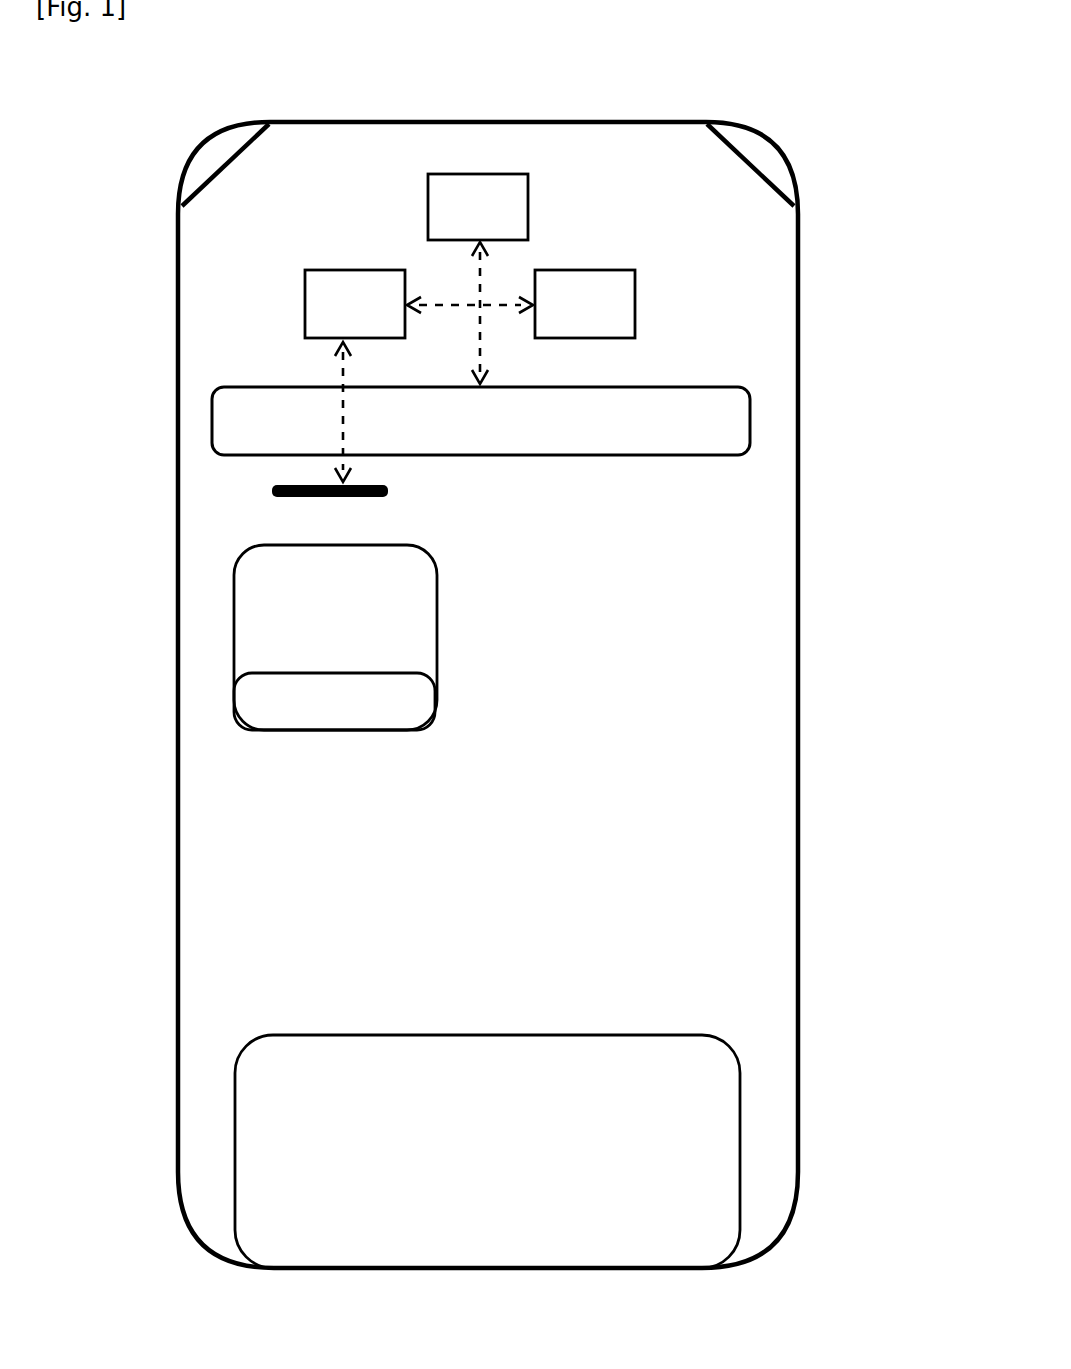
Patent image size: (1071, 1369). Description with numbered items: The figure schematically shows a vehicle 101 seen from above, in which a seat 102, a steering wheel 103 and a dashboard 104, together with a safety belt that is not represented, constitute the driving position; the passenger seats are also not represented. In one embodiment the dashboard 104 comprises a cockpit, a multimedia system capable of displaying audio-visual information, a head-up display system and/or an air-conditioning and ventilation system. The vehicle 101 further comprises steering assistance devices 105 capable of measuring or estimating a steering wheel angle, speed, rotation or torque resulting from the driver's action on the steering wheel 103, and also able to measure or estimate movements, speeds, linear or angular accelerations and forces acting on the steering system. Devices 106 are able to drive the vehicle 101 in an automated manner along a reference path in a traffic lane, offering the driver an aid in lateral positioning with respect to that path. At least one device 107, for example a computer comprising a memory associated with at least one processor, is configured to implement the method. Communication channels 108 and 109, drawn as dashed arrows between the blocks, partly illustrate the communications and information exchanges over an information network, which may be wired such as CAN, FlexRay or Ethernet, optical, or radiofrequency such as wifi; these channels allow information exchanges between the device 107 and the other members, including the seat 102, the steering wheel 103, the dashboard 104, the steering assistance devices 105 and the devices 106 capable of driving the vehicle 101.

The vehicle 101 is at (826, 99).
The seat 102 is at (326, 735).
The steering wheel 103 is at (262, 490).
The dashboard 104 is at (250, 386).
The steering assistance devices 105 is at (355, 304).
The devices able to drive the vehicle in an automated manner 106 is at (585, 304).
The device 107 is at (478, 207).
The communication channel 108 is at (348, 400).
The communication channel 109 is at (458, 304).